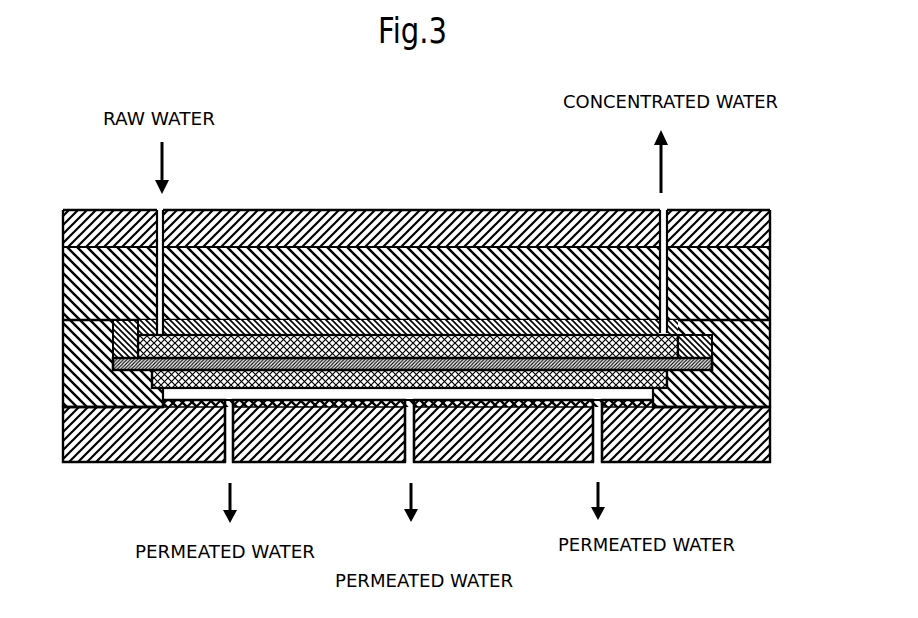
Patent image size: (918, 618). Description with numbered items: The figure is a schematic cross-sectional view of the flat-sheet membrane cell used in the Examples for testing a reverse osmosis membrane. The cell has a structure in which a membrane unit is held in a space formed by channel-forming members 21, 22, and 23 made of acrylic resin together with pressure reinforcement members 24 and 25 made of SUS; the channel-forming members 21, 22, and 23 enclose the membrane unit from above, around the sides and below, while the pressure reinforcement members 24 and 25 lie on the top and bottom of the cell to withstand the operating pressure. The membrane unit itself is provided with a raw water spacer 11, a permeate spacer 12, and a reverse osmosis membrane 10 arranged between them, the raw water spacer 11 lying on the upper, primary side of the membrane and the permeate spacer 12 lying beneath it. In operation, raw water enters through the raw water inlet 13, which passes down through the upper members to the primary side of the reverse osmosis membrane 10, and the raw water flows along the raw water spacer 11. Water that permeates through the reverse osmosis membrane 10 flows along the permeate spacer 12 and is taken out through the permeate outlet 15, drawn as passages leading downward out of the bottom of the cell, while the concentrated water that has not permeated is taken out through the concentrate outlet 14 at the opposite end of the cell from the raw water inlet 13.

The reverse osmosis membrane 10 is at (712, 364).
The raw water spacer 11 is at (713, 334).
The permeate spacer 12 is at (718, 382).
The raw water inlet 13 is at (163, 208).
The concentrate outlet 14 is at (665, 208).
The permeate outlet 15 is at (229, 463).
The channel-forming member 21 is at (760, 262).
The channel-forming member 22 is at (770, 402).
The channel-forming member 23 is at (113, 340).
The pressure reinforcement member 24 is at (118, 208).
The pressure reinforcement member 25 is at (108, 463).